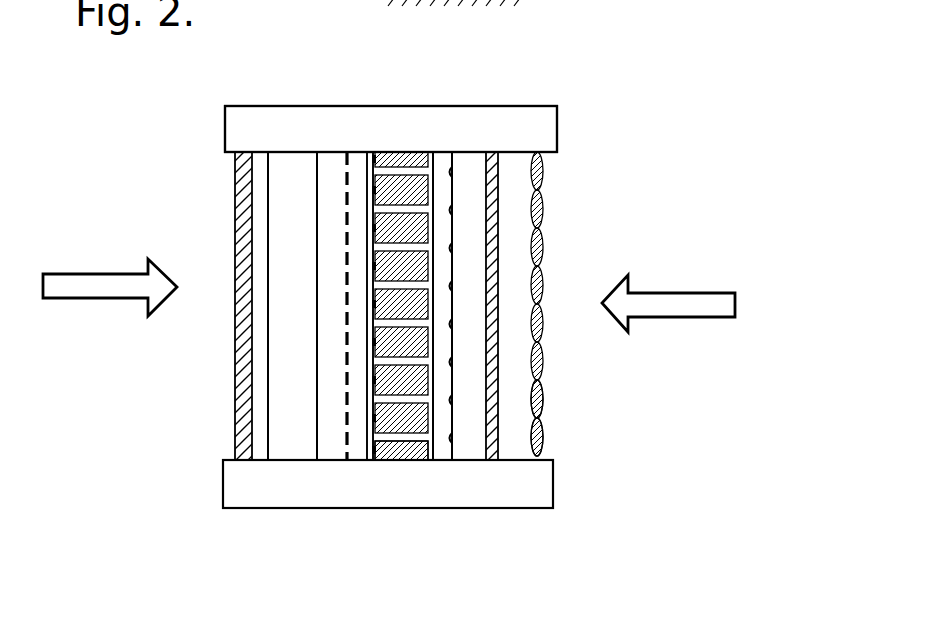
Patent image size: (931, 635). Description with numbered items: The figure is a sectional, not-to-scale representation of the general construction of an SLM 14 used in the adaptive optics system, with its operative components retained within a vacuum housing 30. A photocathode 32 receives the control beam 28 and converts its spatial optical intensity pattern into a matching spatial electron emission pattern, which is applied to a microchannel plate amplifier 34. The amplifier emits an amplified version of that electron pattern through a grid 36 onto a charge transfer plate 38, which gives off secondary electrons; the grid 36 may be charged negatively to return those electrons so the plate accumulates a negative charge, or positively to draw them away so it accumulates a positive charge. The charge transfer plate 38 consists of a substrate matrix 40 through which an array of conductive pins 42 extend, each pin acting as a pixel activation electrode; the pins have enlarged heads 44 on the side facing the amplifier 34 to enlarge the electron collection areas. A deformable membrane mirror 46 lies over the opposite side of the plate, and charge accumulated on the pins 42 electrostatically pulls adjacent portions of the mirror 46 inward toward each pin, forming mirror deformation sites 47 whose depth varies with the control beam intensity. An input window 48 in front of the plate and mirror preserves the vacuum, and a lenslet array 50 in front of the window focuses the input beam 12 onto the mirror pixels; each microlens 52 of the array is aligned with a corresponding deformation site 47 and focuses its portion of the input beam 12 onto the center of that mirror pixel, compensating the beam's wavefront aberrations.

The input beam 12 is at (660, 293).
The fuel cell assembly 14 is at (228, 100).
The control beam 28 is at (110, 273).
The vacuum housing 30 is at (557, 110).
The photocathode 32 is at (236, 222).
The microchannel plate amplifier 34 is at (288, 360).
The grid 36 is at (347, 176).
The charge transfer plate 38 is at (354, 161).
The substrate matrix 40 is at (406, 154).
The conductive pins 42 is at (390, 446).
The enlarged heads 44 is at (367, 428).
The deformable membrane mirror 46 is at (456, 178).
The mirror deformation site 47 is at (453, 402).
The input window 48 is at (500, 436).
The lenslet array 50 is at (565, 208).
The microlenses 52 is at (541, 443).